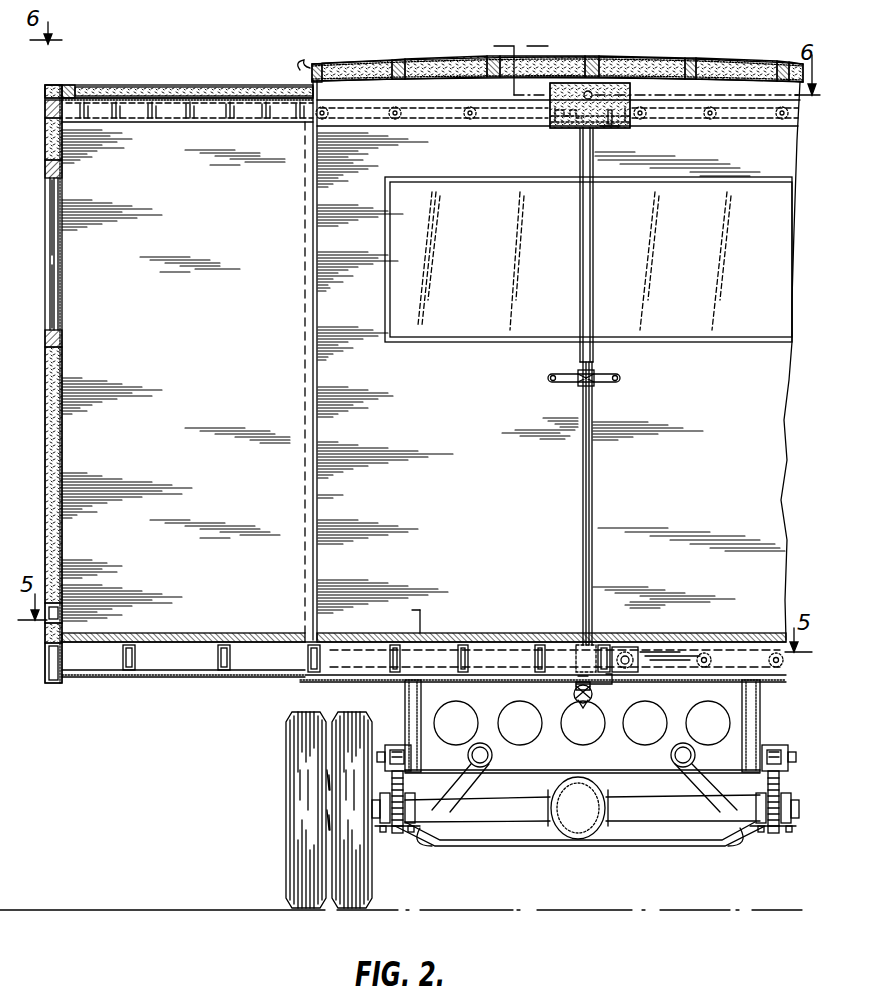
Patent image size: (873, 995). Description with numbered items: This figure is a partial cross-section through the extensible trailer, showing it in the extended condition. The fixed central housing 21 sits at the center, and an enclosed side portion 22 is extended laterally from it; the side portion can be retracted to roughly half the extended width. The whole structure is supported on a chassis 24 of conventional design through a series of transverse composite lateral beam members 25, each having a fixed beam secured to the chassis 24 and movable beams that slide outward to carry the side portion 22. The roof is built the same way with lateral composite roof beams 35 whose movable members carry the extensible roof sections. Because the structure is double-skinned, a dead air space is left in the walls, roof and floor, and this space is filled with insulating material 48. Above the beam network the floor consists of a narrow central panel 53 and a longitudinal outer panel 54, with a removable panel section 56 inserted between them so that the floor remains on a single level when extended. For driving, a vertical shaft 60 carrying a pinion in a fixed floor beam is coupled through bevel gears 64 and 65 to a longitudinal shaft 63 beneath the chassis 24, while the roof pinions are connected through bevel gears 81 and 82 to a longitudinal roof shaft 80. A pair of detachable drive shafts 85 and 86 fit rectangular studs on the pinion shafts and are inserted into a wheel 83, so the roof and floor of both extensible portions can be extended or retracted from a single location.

The central housing 21 is at (597, 58).
The enclosed side portion 22 is at (159, 87).
The chassis 24 is at (760, 712).
The transverse composite lateral beam member 25 is at (354, 673).
The lateral composite roof beam 35 is at (440, 124).
The insulating material 48 is at (50, 484).
The central floor panel 53 is at (606, 640).
The longitudinal outer floor panel 54 is at (238, 633).
The removable panel section 56 is at (497, 640).
The vertical shaft 60 is at (608, 682).
The longitudinal shaft 63 is at (593, 698).
The bevel gear 64 is at (572, 690).
The bevel gear 65 is at (578, 704).
The longitudinal roof shaft 80 is at (586, 96).
The bevel gear 81 is at (611, 122).
The bevel gear 82 is at (636, 97).
The wheel 83 is at (624, 380).
The detachable drive shaft 85 is at (596, 502).
The detachable drive shaft 86 is at (593, 224).